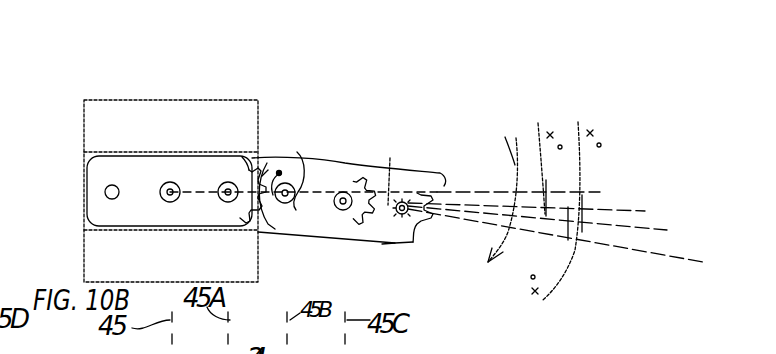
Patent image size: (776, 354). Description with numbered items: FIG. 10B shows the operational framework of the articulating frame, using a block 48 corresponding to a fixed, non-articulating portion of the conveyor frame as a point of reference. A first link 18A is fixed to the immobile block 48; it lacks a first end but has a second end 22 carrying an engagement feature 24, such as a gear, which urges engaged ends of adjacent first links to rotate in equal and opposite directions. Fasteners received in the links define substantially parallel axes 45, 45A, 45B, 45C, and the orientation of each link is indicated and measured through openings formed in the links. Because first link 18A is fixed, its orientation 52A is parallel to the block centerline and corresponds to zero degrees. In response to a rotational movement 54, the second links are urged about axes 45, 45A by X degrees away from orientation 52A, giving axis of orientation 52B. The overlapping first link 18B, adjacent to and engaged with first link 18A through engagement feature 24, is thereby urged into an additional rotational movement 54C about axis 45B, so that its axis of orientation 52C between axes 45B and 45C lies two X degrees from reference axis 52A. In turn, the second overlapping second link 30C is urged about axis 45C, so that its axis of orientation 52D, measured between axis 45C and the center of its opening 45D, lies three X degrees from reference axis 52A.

The block 48 is at (134, 100).
The first link 18A is at (108, 155).
The overlapping first link 18B is at (341, 163).
The second end 22 is at (246, 152).
The engagement feature 24 is at (262, 176).
The additional rotational movement 54C is at (242, 157).
The axis 45 is at (163, 197).
The axis 45A is at (222, 201).
The axis 45B is at (286, 203).
The axis 45C is at (352, 210).
The center of the opening formed in second link 30C 45D is at (410, 205).
The axis of rotation 52A is at (189, 186).
The axis of orientation 52B is at (612, 207).
The axis of orientation 52C is at (297, 170).
The axis of orientation 52D is at (390, 160).
The rotational movement 54 is at (516, 140).
The second overlapping second link 30C is at (382, 244).